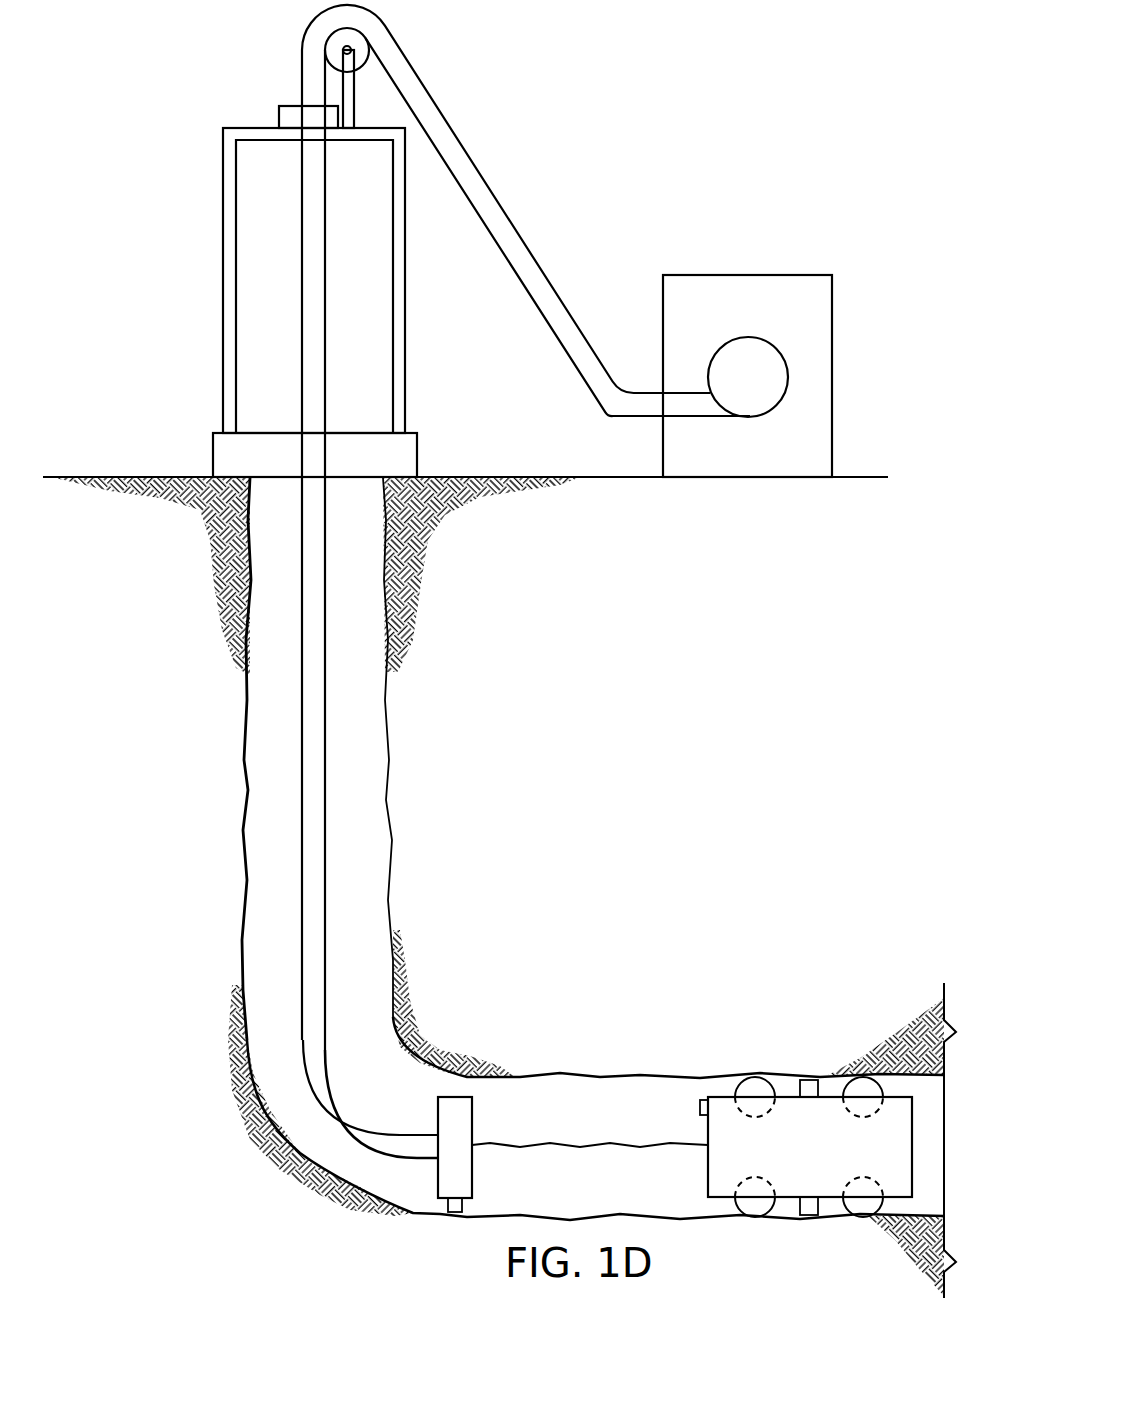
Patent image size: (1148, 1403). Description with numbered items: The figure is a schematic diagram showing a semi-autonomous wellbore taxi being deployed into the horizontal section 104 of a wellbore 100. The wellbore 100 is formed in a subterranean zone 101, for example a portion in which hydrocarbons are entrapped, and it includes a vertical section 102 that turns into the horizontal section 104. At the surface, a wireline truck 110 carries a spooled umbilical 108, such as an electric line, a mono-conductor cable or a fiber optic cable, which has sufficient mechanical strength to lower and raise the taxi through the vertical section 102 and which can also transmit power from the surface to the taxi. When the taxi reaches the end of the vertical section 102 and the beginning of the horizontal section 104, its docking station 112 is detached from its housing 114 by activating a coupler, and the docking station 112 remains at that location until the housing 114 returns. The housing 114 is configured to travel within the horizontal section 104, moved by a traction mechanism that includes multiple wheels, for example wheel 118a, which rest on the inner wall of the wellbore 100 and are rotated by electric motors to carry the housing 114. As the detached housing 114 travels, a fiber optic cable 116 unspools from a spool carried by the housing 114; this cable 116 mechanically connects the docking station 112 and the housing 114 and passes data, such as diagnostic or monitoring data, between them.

The wellbore 100 is at (174, 764).
The subterranean zone 101 is at (628, 662).
The vertical section 102 is at (384, 776).
The horizontal section 104 is at (620, 1078).
The umbilical 108 is at (503, 213).
The wireline truck 110 is at (837, 342).
The docking station 112 is at (435, 1106).
The housing 114 is at (773, 1180).
The fiber optic cable 116 is at (577, 1142).
The wheel 118a is at (778, 1205).